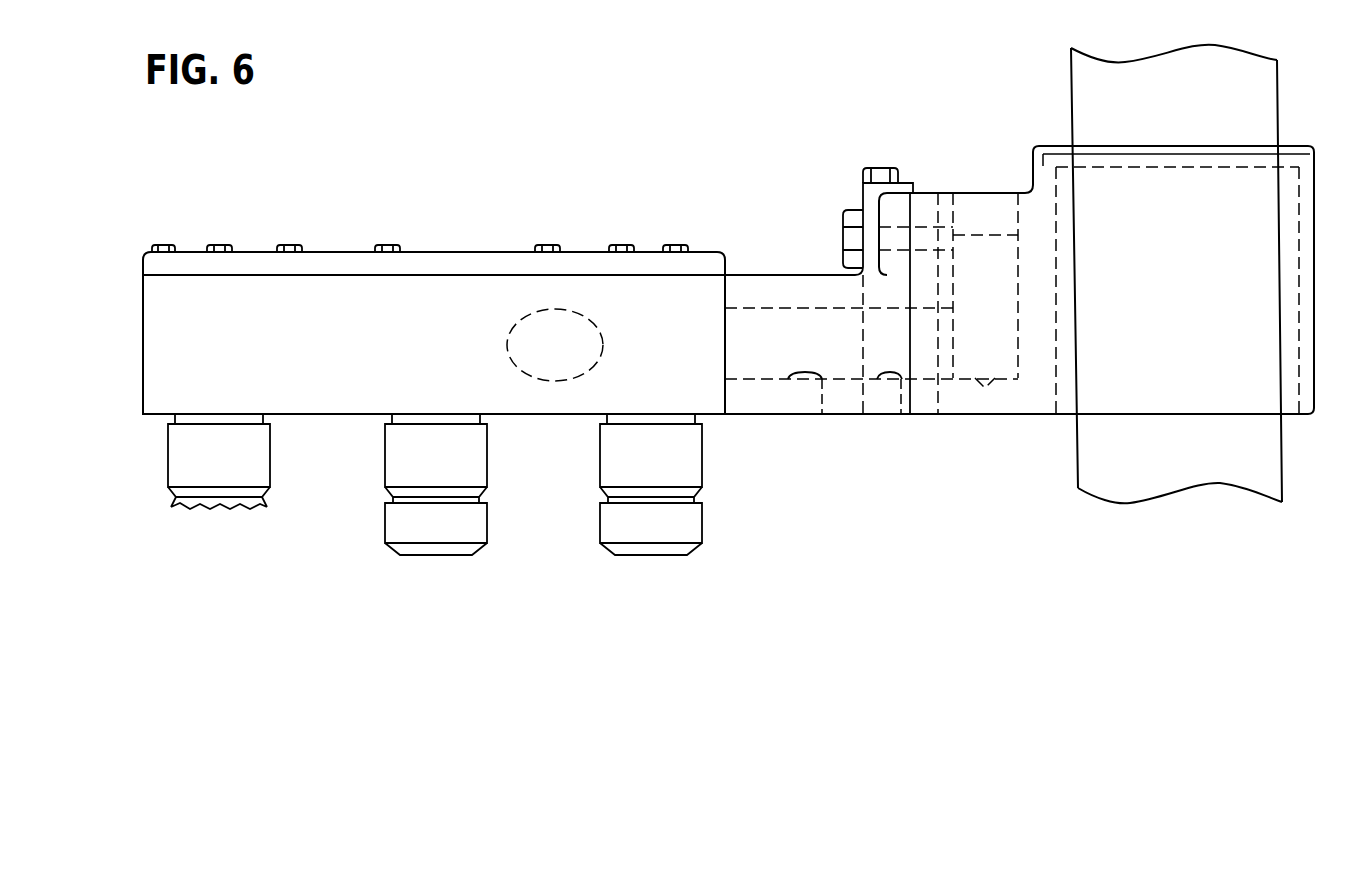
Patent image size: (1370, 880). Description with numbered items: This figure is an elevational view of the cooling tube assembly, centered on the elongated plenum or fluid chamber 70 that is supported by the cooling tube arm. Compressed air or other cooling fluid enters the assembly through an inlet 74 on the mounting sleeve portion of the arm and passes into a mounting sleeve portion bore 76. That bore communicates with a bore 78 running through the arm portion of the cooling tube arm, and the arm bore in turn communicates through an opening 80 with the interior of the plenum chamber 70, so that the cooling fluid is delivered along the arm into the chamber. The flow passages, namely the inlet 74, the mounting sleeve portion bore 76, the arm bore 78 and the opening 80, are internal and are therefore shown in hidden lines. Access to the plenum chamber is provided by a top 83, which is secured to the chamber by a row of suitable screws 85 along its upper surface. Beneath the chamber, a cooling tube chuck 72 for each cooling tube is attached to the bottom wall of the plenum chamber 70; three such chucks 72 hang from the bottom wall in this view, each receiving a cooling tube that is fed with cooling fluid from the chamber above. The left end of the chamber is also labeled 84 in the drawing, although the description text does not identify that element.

The plenum or fluid chamber 70 is at (433, 318).
The cooling tube chuck 72 is at (251, 470).
The inlet 74 is at (985, 222).
The mounting sleeve portion bore 76 is at (901, 414).
The bore 78 is at (822, 414).
The opening 80 is at (594, 345).
The top 83 is at (493, 275).
The end wall 84 is at (183, 374).
The screws 85 is at (287, 245).